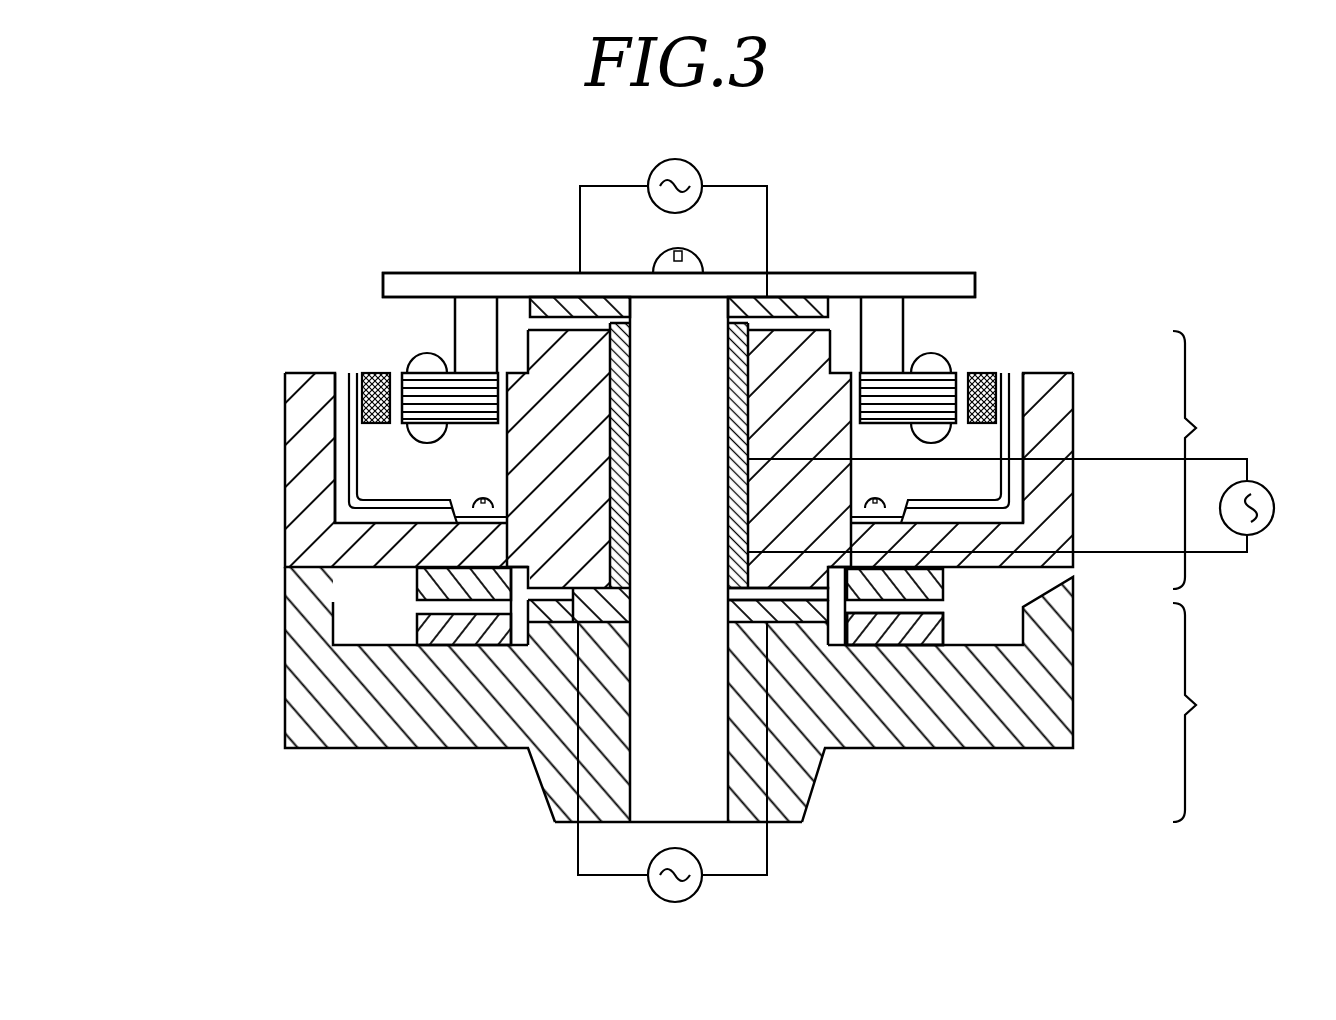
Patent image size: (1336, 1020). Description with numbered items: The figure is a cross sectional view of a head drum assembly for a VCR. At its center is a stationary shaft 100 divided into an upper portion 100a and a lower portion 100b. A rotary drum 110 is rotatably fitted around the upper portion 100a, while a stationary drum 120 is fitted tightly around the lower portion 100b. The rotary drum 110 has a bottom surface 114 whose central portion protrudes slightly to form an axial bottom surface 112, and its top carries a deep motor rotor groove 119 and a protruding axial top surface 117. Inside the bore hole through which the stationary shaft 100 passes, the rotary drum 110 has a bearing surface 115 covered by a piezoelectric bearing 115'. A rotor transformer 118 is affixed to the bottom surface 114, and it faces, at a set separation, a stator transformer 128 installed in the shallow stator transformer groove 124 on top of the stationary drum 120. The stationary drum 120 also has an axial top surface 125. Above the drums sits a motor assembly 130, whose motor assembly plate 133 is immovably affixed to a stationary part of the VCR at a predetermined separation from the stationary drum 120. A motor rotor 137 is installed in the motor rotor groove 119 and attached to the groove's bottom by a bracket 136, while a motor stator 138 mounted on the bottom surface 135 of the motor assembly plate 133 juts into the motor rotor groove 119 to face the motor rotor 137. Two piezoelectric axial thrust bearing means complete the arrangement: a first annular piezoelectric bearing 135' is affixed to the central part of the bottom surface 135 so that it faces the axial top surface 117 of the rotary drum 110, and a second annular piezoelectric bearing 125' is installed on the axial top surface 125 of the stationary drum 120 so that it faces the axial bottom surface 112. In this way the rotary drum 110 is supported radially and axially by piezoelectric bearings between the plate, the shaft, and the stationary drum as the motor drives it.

The stationary shaft 100 is at (652, 807).
The upper portion 100a is at (1234, 460).
The lower portion 100b is at (1234, 712).
The rotary drum 110 is at (310, 452).
The axial bottom surface 112 is at (573, 622).
The bottom surface 114 is at (417, 590).
The bearing surface 115 is at (910, 456).
The piezoelectric bearing 115' is at (849, 432).
The axial top surface 117 is at (553, 330).
The rotor transformer 118 is at (417, 577).
The motor rotor groove 119 is at (337, 425).
The stationary drum 120 is at (1053, 623).
The stator transformer groove 124 is at (360, 649).
The axial top surface 125 is at (899, 726).
The second annular piezoelectric bearing 125' is at (805, 744).
The stator transformer 128 is at (417, 625).
The motor assembly 130 is at (931, 250).
The motor assembly plate 133 is at (407, 283).
The bottom surface 135 is at (684, 231).
The first annular piezoelectric bearing 135' is at (679, 287).
The bracket 136 is at (350, 373).
The motor rotor 137 is at (367, 373).
The motor stator 138 is at (419, 378).